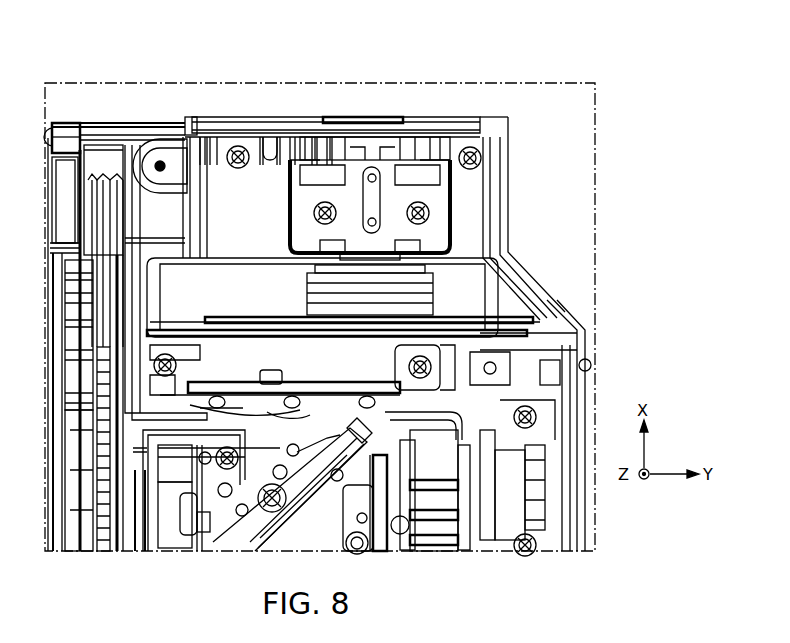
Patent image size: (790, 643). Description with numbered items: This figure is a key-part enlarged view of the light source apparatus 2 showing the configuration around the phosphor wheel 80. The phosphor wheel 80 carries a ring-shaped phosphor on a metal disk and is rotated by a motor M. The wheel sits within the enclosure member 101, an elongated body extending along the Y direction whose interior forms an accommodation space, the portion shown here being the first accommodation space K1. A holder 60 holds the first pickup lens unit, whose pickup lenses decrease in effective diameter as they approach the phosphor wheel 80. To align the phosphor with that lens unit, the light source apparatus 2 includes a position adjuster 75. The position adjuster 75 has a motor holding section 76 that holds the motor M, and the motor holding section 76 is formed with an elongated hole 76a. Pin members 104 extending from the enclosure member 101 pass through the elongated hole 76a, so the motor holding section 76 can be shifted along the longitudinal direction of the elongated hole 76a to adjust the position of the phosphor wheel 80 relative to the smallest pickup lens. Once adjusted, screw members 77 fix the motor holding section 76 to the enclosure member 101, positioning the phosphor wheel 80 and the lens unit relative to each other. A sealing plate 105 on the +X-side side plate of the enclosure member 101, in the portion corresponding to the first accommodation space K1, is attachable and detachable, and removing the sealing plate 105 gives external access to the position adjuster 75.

The light source apparatus 2 is at (565, 123).
The holder 60 is at (183, 358).
The enclosure member 101 is at (256, 305).
The screw members 77 is at (325, 205).
The pin members 104 is at (371, 220).
The elongated hole 76a is at (388, 165).
The sealing plate 105 is at (403, 106).
The motor holding section 76 is at (493, 181).
The position adjuster 75 is at (375, 148).
The first accommodation space K1 is at (493, 233).
The motor M is at (430, 297).
The phosphor wheel 80 is at (503, 297).